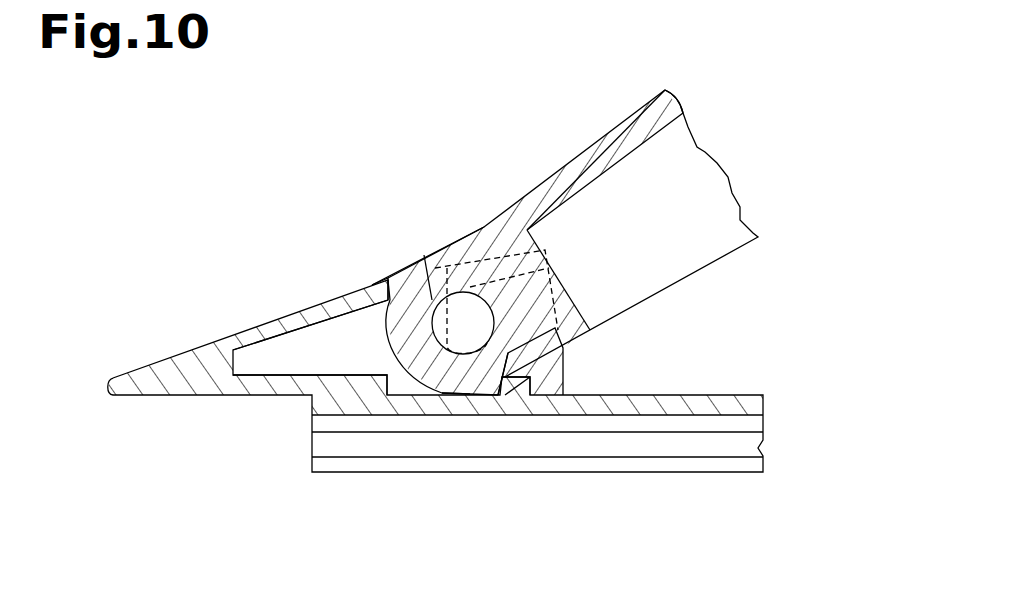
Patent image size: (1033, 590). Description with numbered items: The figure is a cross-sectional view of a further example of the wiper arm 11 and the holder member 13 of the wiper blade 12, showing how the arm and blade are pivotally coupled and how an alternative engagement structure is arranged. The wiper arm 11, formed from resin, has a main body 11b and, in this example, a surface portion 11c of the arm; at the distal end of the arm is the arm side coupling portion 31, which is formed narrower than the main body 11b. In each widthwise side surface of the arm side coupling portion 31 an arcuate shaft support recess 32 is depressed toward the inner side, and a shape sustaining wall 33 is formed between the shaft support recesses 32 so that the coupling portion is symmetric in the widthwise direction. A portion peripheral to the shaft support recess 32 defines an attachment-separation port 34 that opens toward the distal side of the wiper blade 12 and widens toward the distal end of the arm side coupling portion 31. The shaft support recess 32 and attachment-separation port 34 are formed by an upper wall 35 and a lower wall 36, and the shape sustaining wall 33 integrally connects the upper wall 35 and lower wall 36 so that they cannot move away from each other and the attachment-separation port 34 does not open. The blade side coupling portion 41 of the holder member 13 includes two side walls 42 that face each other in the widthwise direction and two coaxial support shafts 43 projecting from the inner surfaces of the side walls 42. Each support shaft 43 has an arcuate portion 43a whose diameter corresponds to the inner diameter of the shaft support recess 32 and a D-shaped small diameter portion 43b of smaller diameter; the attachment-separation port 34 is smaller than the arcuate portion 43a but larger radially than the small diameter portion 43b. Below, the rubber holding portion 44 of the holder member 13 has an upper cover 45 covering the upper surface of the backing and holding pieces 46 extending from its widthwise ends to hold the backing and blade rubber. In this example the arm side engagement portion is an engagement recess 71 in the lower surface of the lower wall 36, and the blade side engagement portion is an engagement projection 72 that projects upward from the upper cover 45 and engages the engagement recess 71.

The wiper arm 11 is at (612, 127).
The main body 11b is at (647, 103).
The arm surface 11c is at (558, 172).
The wiper blade 12 is at (248, 324).
The holder member 13 is at (250, 328).
The arm side coupling portion 31 is at (413, 286).
The shaft support recess 32 is at (465, 292).
The shape sustaining wall 33 is at (440, 380).
The attachment-separation port 34 is at (400, 372).
The upper wall 35 is at (390, 328).
The lower wall 36 is at (502, 370).
The blade side coupling portion 41 is at (407, 387).
The side wall 42 is at (567, 288).
The support shaft 43 is at (463, 323).
The arcuate portion 43a is at (545, 265).
The small diameter portion 43b is at (425, 263).
The rubber holding portion 44 is at (565, 472).
The upper cover 45 is at (705, 400).
The holding piece 46 is at (622, 450).
The engagement recess 71 is at (563, 350).
The engagement projection 72 is at (533, 383).